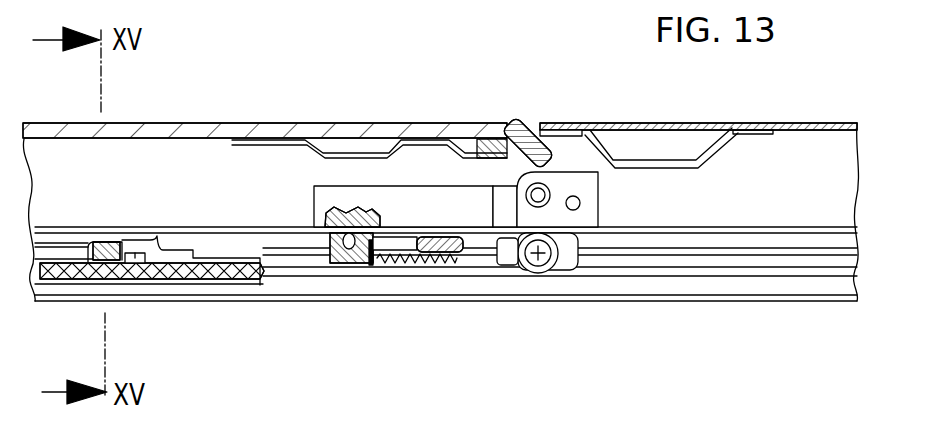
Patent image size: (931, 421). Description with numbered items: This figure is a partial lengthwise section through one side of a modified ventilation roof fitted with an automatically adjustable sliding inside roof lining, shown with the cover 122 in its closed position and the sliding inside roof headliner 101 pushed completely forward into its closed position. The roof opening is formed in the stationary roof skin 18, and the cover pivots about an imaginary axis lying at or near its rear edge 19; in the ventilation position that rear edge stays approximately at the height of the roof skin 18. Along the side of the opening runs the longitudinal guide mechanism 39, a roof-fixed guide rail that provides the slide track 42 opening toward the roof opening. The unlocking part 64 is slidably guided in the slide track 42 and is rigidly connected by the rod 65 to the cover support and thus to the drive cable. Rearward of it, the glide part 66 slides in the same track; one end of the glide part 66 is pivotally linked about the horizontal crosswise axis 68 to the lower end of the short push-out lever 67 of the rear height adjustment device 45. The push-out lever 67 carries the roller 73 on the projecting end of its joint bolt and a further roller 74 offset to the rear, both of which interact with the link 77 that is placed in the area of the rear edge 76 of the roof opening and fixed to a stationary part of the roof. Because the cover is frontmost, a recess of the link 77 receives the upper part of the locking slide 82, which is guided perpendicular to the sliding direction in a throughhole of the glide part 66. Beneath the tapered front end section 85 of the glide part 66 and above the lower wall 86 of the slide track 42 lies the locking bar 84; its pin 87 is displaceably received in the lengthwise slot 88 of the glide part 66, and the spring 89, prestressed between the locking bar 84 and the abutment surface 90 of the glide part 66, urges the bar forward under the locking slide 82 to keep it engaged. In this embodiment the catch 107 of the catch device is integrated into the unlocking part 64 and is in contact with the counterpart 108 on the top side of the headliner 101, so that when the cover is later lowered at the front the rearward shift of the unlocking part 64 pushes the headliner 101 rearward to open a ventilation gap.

The stationary roof skin 18 is at (828, 123).
The rear edge of the cover 19 is at (508, 121).
The longitudinal guide mechanism 39 is at (790, 227).
The slide track 42 is at (729, 238).
The rear height adjustment device 45 is at (634, 312).
The unlocking part 64 is at (140, 241).
The rod 65 is at (63, 252).
The glide part 66 is at (510, 266).
The push-out lever 67 is at (574, 250).
The horizontal crosswise axis 68 is at (544, 268).
The roller 73 is at (547, 188).
The roller 74 is at (576, 199).
The rear edge of the roof opening 76 is at (548, 131).
The link 77 is at (340, 192).
The locking slide 82 is at (350, 236).
The locking bar 84 is at (350, 265).
The tapered front end section of the glide part 85 is at (328, 249).
The lower wall of the slide track 86 is at (800, 263).
The pin 87 is at (372, 265).
The lengthwise slot 88 is at (399, 242).
The spring 89 is at (421, 268).
The abutment surface 90 is at (450, 270).
The sliding inside roof headliner 101 is at (202, 278).
The catch 107 is at (102, 242).
The counterpart 108 is at (142, 280).
The cover 122 is at (131, 123).